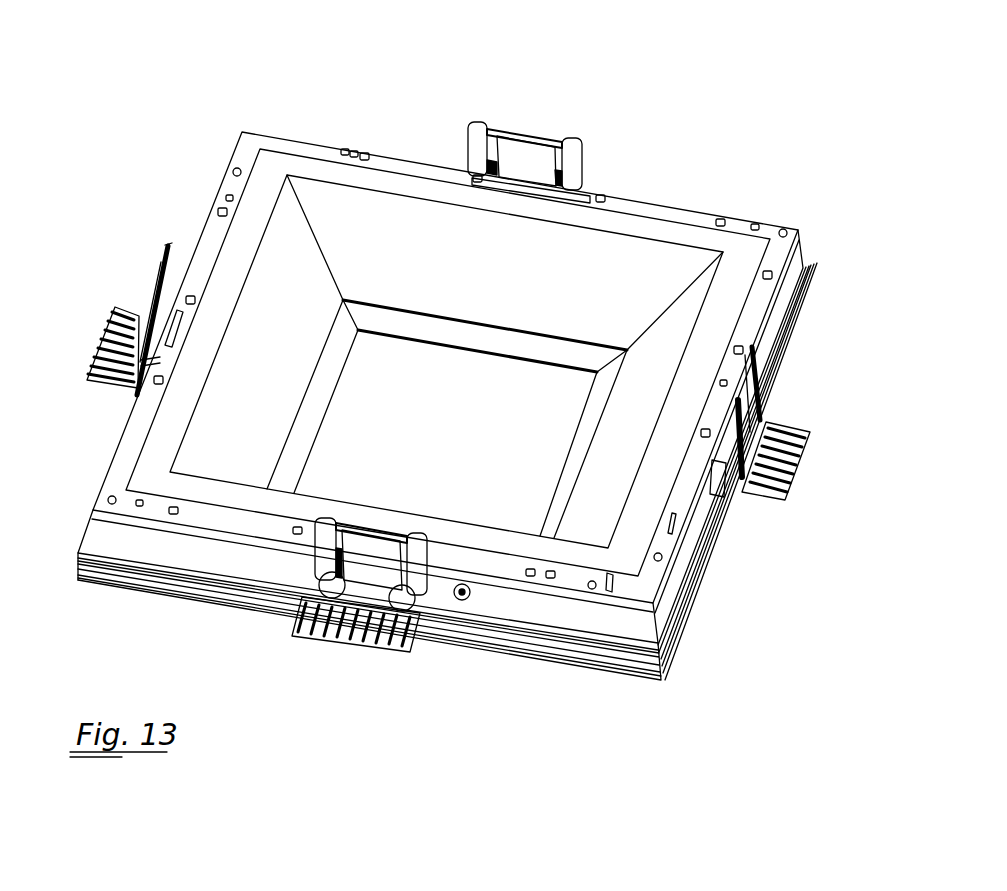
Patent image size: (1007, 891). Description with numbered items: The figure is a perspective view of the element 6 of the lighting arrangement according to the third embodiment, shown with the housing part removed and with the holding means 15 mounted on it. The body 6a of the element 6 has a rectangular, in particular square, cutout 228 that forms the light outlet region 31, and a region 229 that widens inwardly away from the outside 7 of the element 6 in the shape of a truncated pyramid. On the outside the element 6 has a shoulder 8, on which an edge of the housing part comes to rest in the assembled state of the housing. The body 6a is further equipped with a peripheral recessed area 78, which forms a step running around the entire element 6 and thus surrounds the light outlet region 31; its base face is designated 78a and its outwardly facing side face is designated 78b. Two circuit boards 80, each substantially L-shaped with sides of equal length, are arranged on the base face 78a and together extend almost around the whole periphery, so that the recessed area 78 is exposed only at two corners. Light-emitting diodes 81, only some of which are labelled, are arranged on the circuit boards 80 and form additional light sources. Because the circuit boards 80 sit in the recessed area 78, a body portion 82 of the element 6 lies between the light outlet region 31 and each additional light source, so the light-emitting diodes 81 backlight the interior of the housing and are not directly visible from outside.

The element 6 is at (45, 609).
The body 6a is at (103, 572).
The outside 7 is at (283, 628).
The shoulder 8 is at (805, 266).
The holding means 15 is at (576, 136).
The light outlet region 31 is at (463, 447).
The recessed area 78 is at (654, 586).
The base face 78a is at (637, 598).
The side face 78b is at (627, 582).
The circuit board 80 is at (136, 428).
The light-emitting diode 81 is at (215, 213).
The body portion 82 is at (727, 310).
The cutout 228 is at (445, 358).
The region 229 is at (333, 218).